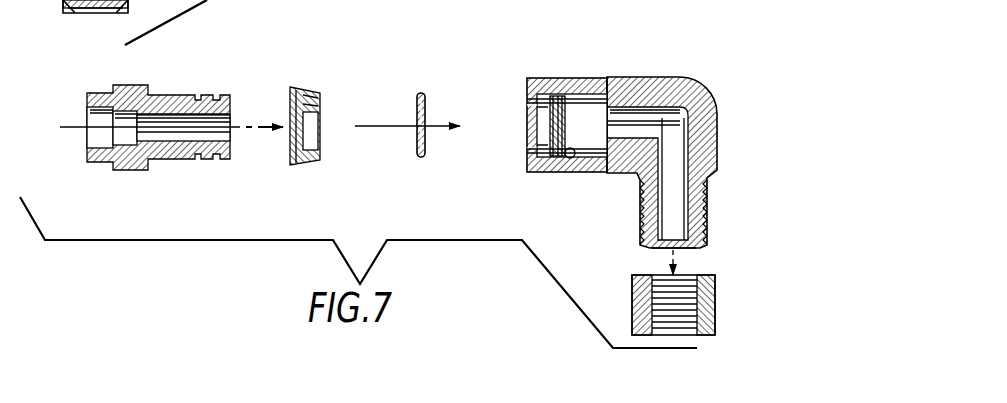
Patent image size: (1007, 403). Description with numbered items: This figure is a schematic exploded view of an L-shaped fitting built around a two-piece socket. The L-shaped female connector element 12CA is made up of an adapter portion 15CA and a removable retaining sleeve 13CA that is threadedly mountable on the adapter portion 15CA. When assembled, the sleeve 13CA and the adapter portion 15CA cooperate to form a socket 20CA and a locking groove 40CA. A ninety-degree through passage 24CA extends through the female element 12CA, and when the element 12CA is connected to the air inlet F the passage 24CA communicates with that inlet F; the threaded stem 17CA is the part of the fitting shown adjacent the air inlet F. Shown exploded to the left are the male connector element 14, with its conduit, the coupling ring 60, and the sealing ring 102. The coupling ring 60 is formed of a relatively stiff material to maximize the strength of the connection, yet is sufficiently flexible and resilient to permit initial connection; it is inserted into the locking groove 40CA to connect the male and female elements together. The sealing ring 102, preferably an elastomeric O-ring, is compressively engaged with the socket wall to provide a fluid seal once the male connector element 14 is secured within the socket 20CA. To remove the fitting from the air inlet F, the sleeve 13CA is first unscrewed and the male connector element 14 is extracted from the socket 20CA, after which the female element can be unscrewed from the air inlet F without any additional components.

The male connector element 14 is at (122, 178).
The coupling ring 60 is at (300, 165).
The sealing ring 102 is at (420, 161).
The retaining sleeve 13CA is at (545, 78).
The L-shaped female connector element 12CA is at (736, 129).
The locking groove 40CA is at (537, 103).
The socket 20CA is at (565, 132).
The adapter portion 15CA is at (573, 170).
The through passage 24CA is at (680, 152).
The threaded stem 17CA is at (718, 206).
The air inlet F is at (717, 294).